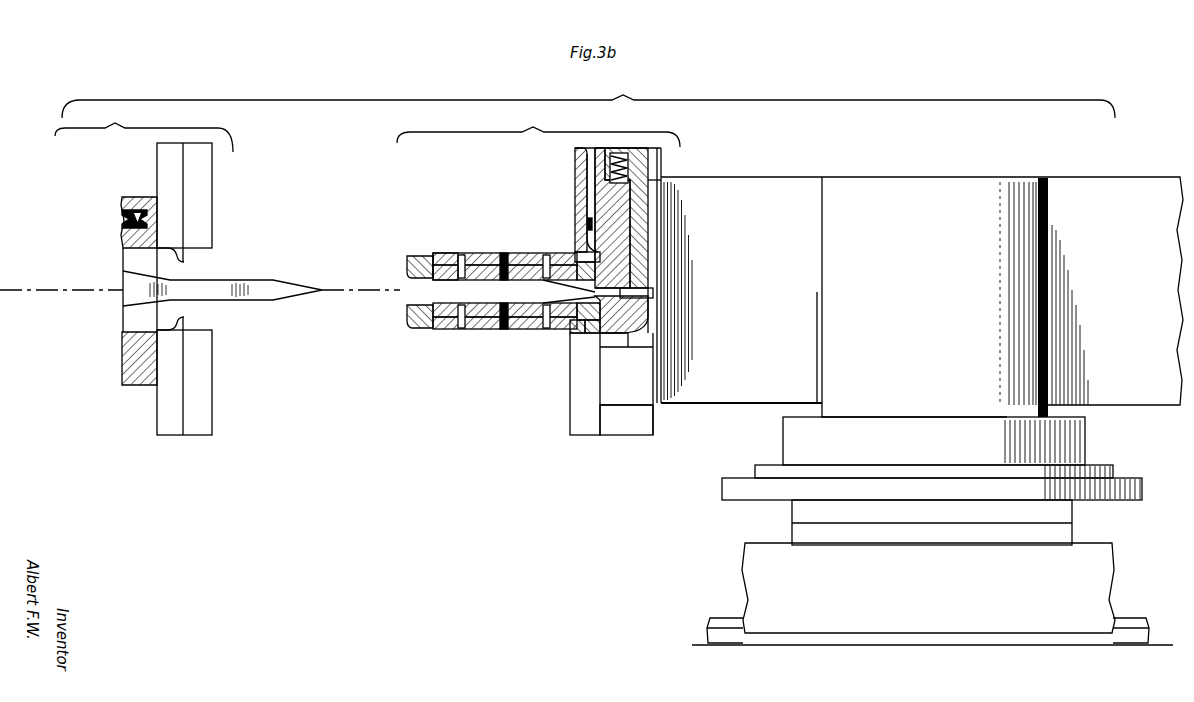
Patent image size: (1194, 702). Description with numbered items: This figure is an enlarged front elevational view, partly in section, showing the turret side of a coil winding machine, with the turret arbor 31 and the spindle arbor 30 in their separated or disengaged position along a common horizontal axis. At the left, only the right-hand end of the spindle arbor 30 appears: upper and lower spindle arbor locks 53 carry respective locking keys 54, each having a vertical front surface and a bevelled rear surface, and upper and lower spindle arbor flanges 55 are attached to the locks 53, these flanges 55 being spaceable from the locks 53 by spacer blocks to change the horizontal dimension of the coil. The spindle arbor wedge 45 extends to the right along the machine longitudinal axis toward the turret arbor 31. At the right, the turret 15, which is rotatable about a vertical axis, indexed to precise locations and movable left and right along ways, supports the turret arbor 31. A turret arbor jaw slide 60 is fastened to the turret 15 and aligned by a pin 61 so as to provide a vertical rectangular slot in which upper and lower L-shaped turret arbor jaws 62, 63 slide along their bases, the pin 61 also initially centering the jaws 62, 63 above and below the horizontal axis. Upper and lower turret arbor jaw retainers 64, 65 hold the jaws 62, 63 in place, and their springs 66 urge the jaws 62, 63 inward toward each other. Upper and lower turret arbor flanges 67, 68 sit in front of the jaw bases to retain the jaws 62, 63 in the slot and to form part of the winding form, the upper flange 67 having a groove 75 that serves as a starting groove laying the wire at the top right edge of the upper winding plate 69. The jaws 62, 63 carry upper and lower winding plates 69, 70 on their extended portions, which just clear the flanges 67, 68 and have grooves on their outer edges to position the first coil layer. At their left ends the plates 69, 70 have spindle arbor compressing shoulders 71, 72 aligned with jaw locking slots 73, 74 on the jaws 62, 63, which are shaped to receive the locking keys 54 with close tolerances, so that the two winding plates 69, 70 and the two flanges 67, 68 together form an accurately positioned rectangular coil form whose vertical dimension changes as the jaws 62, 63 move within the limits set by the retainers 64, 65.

The turret 15 is at (934, 165).
The spindle arbor 30 is at (108, 120).
The turret arbor 31 is at (531, 118).
The spindle arbor wedge 45 is at (268, 278).
The spindle arbor locks 53 is at (160, 165).
The locking keys 54 is at (186, 258).
The spindle arbor flanges 55 is at (205, 172).
The turret arbor jaw slide 60 is at (640, 218).
The pin 61 is at (655, 291).
The upper turret arbor jaw 62 is at (605, 196).
The lower turret arbor jaw 63 is at (557, 334).
The upper turret arbor jaw retainer 64 is at (650, 160).
The lower turret arbor jaw retainer 65 is at (627, 422).
The springs 66 is at (660, 175).
The upper turret arbor flange 67 is at (575, 163).
The lower turret arbor flange 68 is at (580, 410).
The upper winding plate 69 is at (483, 252).
The lower winding plate 70 is at (480, 330).
The spindle arbor compressing shoulder 71 is at (437, 262).
The spindle arbor compressing shoulder 72 is at (432, 329).
The jaw locking slot 73 is at (418, 258).
The jaw locking slot 74 is at (418, 322).
The groove 75 is at (590, 178).